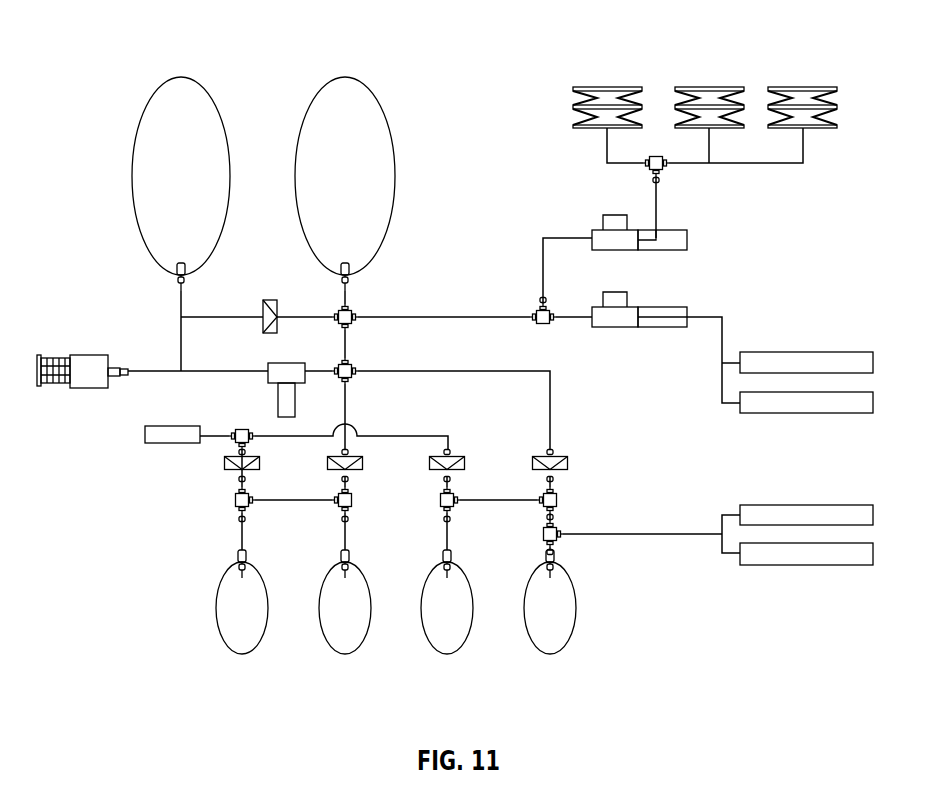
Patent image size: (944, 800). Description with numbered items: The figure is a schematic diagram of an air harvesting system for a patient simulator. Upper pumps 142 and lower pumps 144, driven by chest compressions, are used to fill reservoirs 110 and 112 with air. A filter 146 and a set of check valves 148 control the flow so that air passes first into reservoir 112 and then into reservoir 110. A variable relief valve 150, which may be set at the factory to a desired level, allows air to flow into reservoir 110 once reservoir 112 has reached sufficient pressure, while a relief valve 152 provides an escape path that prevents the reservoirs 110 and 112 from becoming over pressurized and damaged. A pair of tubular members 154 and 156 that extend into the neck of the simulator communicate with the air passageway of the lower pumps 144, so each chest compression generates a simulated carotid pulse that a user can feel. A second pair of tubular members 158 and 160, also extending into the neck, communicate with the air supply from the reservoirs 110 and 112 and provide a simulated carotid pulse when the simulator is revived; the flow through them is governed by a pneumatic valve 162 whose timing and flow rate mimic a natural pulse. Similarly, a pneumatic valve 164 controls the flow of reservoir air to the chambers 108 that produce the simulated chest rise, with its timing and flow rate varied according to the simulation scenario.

The chambers 108 is at (607, 86).
The reservoir 110 is at (179, 77).
The reservoir 112 is at (341, 76).
The upper pumps 142 is at (243, 655).
The lower pumps 144 is at (448, 655).
The filter 146 is at (157, 446).
The check valves 148 is at (271, 298).
The variable relief valve 150 is at (277, 363).
The relief valve 152 is at (90, 355).
The tubular member 154 is at (777, 504).
The tubular member 156 is at (798, 566).
The tubular member 158 is at (807, 352).
The tubular member 160 is at (838, 413).
The pneumatic valve 162 is at (615, 328).
The pneumatic valve 164 is at (598, 230).